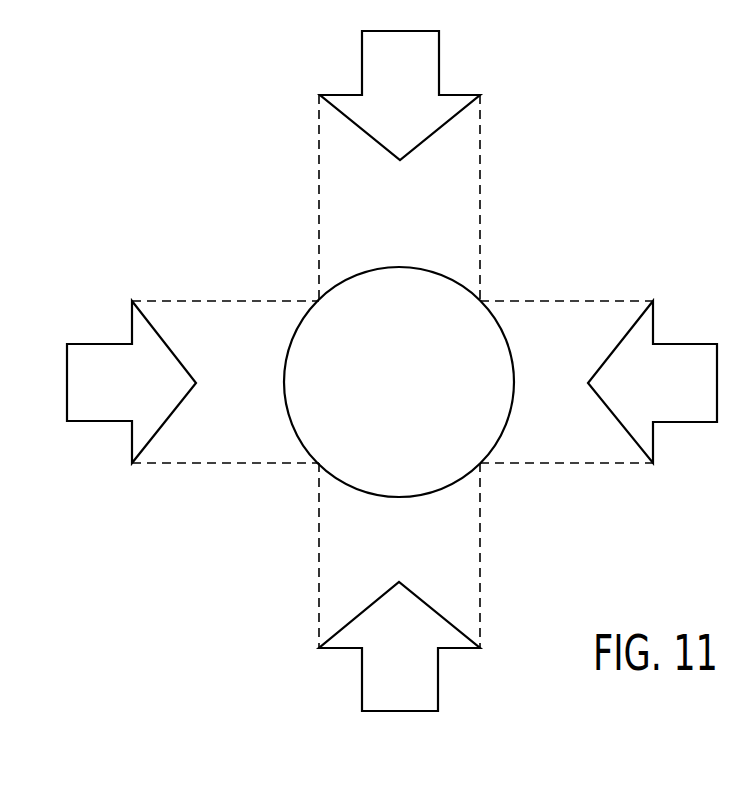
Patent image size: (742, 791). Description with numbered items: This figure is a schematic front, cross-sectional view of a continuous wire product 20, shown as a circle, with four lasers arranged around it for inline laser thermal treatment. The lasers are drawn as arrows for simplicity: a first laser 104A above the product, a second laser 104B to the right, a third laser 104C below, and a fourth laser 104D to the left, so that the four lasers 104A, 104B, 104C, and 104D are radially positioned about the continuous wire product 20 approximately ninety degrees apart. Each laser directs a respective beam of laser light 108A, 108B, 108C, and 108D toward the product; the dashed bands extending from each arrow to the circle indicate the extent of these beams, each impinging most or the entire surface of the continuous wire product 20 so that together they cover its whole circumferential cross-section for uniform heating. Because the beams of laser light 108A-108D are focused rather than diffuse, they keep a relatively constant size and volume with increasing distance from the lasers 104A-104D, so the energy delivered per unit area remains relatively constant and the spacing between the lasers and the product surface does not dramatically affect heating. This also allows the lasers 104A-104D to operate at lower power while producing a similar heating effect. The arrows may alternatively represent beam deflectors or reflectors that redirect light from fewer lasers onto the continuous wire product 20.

The continuous wire product 20 is at (386, 401).
The first laser 104A is at (362, 62).
The second laser 104B is at (687, 344).
The third laser 104C is at (438, 680).
The fourth laser 104D is at (100, 421).
The beam of laser light 108A is at (480, 196).
The beam of laser light 108B is at (582, 464).
The beam of laser light 108C is at (319, 565).
The beam of laser light 108D is at (212, 301).